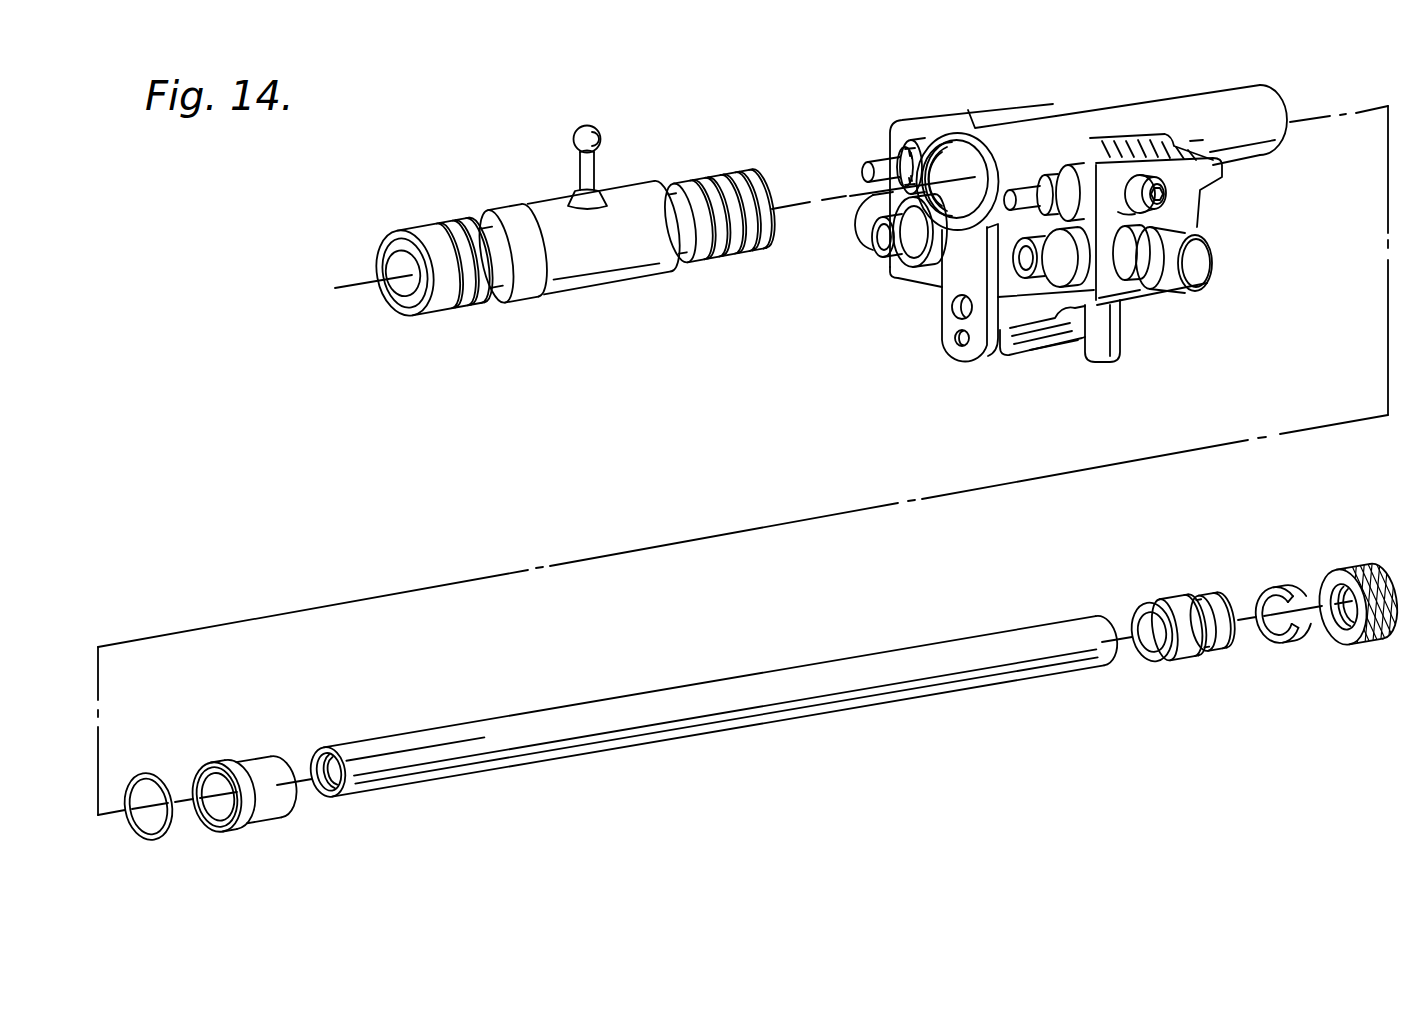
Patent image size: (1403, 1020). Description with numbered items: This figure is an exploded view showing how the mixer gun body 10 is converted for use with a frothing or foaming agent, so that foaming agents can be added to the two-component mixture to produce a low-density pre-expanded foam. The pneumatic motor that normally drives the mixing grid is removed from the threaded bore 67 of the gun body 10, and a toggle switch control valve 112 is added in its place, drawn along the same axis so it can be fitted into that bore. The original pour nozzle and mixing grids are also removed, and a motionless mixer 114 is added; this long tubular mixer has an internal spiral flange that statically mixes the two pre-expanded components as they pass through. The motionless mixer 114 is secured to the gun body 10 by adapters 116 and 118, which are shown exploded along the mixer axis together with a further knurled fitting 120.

The gun body 10 is at (1147, 98).
The threaded bore 67 is at (933, 132).
The toggle switch control valve 112 is at (608, 291).
The motionless mixer 114 is at (750, 673).
The adapter 116 is at (233, 762).
The adapter 118 is at (1183, 594).
The knurled cap 120 is at (1353, 566).